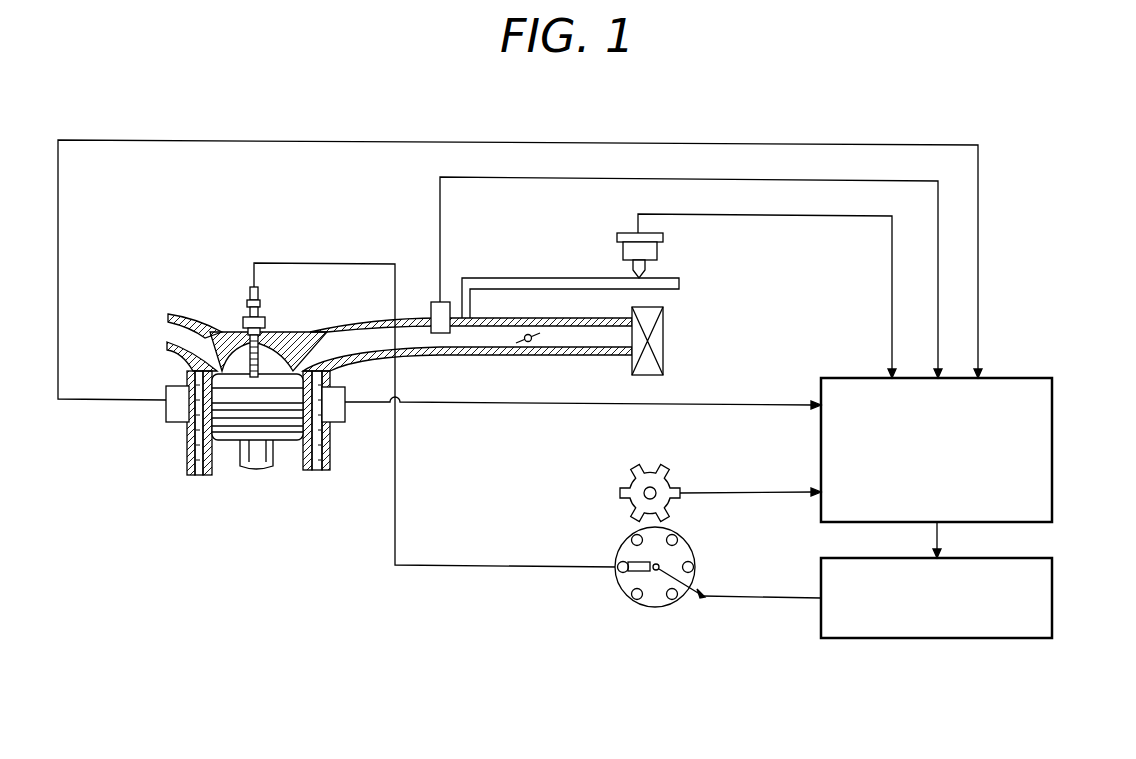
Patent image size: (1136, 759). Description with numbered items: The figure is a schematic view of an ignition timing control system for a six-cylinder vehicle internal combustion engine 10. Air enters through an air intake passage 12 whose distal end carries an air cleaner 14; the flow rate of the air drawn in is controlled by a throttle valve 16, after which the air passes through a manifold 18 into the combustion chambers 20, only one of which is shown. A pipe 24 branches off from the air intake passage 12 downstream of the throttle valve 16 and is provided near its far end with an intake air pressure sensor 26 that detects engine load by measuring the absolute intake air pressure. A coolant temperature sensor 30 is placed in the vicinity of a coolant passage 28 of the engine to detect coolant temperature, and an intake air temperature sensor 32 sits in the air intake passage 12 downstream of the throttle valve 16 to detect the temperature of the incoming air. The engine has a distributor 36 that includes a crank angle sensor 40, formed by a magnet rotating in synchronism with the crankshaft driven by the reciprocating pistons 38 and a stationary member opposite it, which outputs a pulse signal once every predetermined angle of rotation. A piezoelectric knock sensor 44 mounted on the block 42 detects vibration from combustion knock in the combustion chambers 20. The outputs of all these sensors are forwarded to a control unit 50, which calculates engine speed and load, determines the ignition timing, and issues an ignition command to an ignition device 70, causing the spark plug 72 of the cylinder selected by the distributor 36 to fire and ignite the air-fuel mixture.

The internal combustion engine 10 is at (172, 379).
The air intake passage 12 is at (480, 355).
The air cleaner 14 is at (663, 358).
The throttle valve 16 is at (542, 338).
The manifold 18 is at (318, 327).
The combustion chamber 20 is at (250, 382).
The pipe 24 is at (533, 278).
The intake air pressure sensor 26 is at (618, 233).
The coolant passage 28 is at (329, 437).
The coolant temperature sensor 30 is at (343, 407).
The intake air temperature sensor 32 is at (430, 302).
The distributor 36 is at (620, 583).
The piston 38 is at (287, 443).
The crank angle sensor 40 is at (632, 503).
The block 42 is at (183, 368).
The knock sensor 44 is at (173, 421).
The control unit 50 is at (1052, 423).
The ignition device 70 is at (943, 638).
The spark plug 72 is at (248, 300).